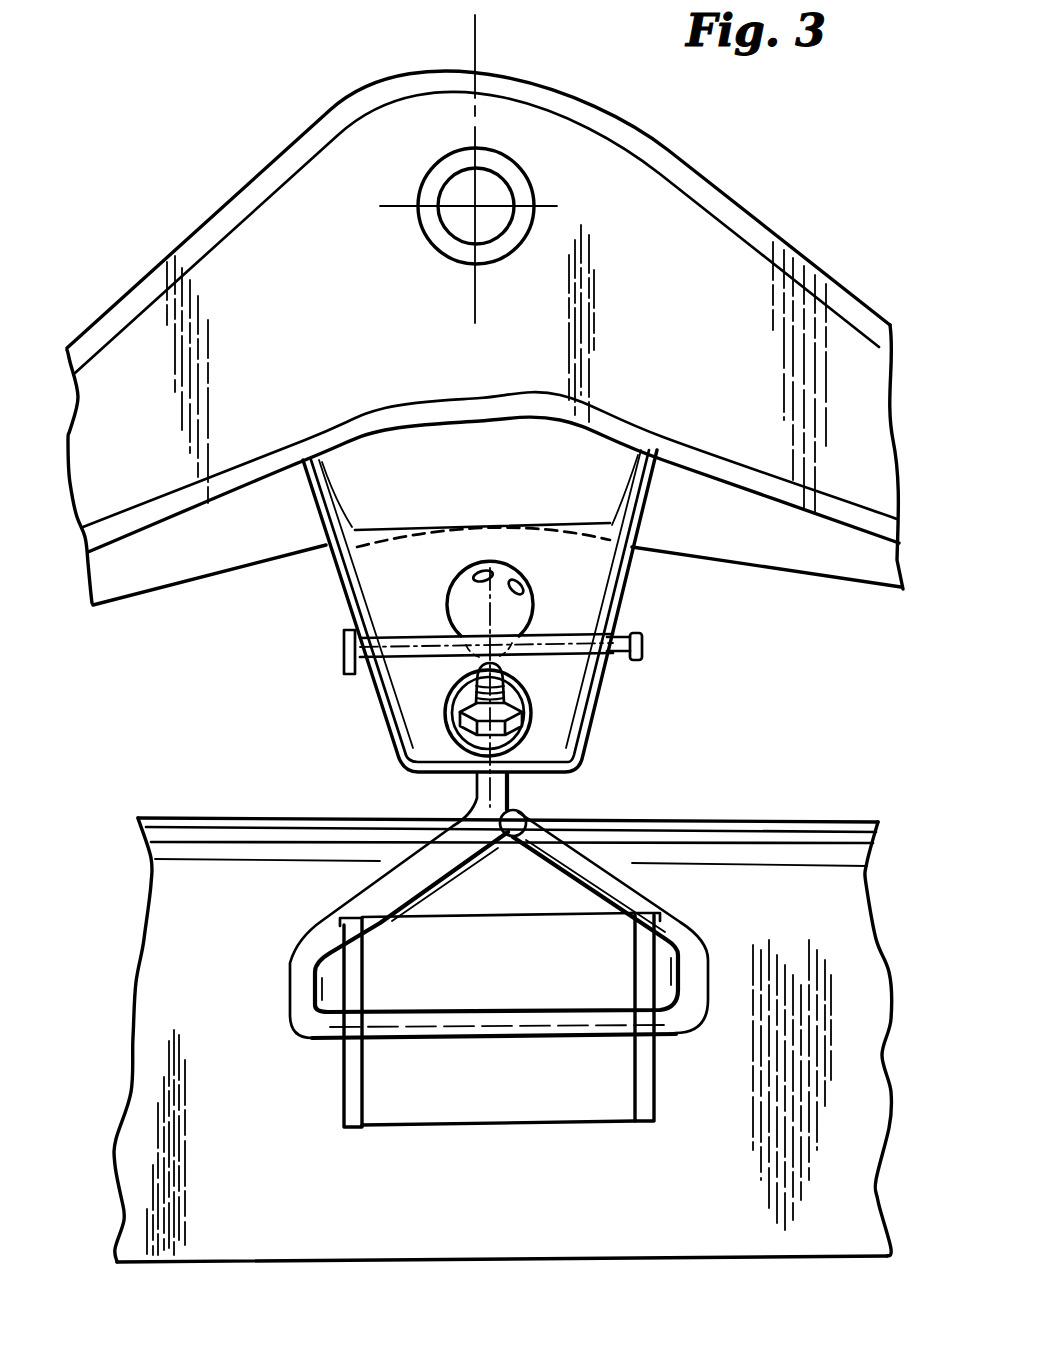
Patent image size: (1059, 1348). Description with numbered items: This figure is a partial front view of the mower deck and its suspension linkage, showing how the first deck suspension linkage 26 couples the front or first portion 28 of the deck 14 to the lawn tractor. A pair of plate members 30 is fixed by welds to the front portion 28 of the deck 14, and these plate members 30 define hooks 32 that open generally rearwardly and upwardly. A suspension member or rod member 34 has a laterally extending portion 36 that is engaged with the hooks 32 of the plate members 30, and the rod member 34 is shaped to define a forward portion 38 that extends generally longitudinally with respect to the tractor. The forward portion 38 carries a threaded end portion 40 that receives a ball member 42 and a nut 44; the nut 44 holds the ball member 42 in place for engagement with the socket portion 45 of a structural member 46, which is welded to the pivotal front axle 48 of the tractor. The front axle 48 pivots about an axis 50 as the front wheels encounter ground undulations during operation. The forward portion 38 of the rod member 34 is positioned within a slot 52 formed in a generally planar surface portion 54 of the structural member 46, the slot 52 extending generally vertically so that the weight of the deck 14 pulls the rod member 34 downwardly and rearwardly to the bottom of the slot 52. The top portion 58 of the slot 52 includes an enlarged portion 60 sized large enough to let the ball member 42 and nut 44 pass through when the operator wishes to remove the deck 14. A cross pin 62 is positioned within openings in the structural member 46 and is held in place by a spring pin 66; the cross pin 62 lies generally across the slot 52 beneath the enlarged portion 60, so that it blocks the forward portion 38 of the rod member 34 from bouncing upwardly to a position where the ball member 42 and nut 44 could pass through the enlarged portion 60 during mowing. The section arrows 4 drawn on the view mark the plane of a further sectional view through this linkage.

The section line 4- 4 is at (432, 32).
The deck 14 is at (800, 847).
The first deck suspension linkage 26 is at (693, 700).
The front or first portion of the deck 28 is at (831, 917).
The plate members 30 is at (350, 1088).
The hooks 32 is at (352, 955).
The rod member 34 is at (365, 893).
The laterally extending portion 36 is at (513, 1040).
The forward portion 38 is at (468, 673).
The threaded end portion 40 is at (450, 705).
The ball member 42 is at (527, 732).
The nut 44 is at (527, 705).
The socket portion 45 is at (517, 733).
The structural member 46 is at (645, 552).
The pivotal front axle 48 is at (677, 162).
The axis 50 is at (478, 205).
The slot 52 is at (450, 597).
The generally planar surface portion 54 is at (438, 571).
The top portion of the slot 58 is at (490, 572).
The enlarged portion 60 is at (525, 583).
The cross pin 62 is at (372, 632).
The spring pin 66 is at (634, 630).